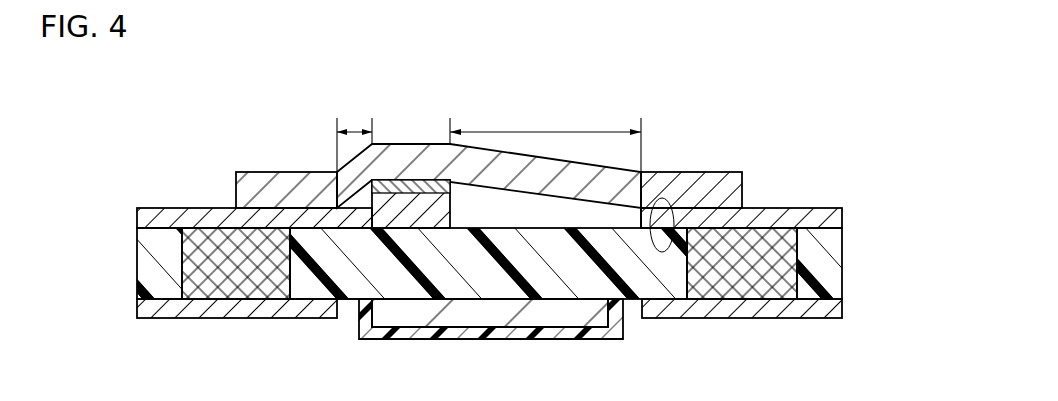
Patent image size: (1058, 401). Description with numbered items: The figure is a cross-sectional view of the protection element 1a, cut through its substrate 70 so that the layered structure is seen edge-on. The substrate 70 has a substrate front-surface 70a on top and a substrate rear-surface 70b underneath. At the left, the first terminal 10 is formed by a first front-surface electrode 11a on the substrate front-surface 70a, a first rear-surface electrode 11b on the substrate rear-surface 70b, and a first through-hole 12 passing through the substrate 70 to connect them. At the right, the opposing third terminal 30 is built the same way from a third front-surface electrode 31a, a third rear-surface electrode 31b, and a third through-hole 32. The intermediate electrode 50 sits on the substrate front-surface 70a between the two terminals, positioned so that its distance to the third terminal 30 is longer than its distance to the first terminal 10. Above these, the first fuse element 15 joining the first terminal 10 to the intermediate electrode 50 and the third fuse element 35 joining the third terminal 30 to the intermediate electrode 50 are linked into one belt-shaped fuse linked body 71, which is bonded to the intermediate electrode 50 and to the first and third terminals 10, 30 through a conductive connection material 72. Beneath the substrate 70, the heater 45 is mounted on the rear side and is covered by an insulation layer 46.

The protection element 1a is at (775, 93).
The first terminal 10 is at (152, 197).
The first front-surface electrode 11a is at (147, 218).
The first rear-surface electrode 11b is at (148, 312).
The first through-hole 12 is at (192, 267).
The first fuse element 15 is at (270, 172).
The third terminal 30 is at (785, 200).
The third front-surface electrode 31a is at (830, 213).
The third rear-surface electrode 31b is at (825, 313).
The third through-hole 32 is at (790, 264).
The third fuse element 35 is at (705, 172).
The heater 45 is at (475, 320).
The insulation layer 46 is at (405, 340).
The intermediate electrode 50 is at (438, 200).
The substrate 70 is at (846, 232).
The substrate front-surface 70a is at (663, 252).
The substrate rear-surface 70b is at (346, 300).
The fuse linked body 71 is at (407, 118).
The conductive connection material 72 is at (398, 185).